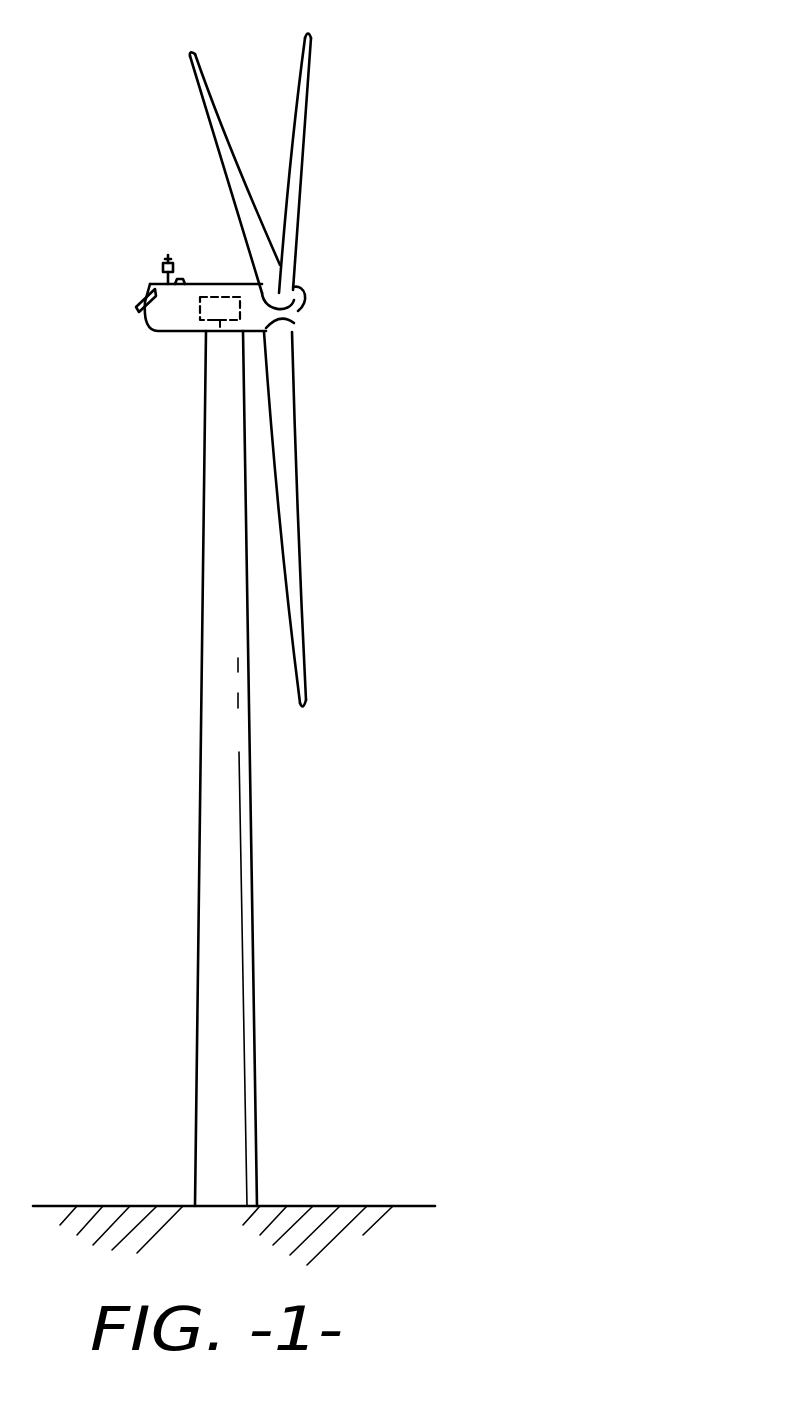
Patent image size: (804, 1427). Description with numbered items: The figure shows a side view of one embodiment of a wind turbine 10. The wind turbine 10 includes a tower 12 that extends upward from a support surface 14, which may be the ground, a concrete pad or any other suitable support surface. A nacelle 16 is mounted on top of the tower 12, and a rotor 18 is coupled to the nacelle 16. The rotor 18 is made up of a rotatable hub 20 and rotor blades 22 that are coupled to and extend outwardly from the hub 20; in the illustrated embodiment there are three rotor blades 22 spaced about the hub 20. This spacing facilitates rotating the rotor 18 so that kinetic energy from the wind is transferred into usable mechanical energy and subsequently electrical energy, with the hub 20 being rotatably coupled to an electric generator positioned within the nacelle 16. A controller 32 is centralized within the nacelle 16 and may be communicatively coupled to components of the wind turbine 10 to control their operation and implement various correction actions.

The wind turbine 10 is at (265, 637).
The tower 12 is at (210, 888).
The support surface 14 is at (118, 1206).
The nacelle 16 is at (177, 315).
The rotor 18 is at (314, 278).
The rotatable hub 20 is at (304, 313).
The rotor blade 22 is at (300, 98).
The controller 32 is at (221, 331).